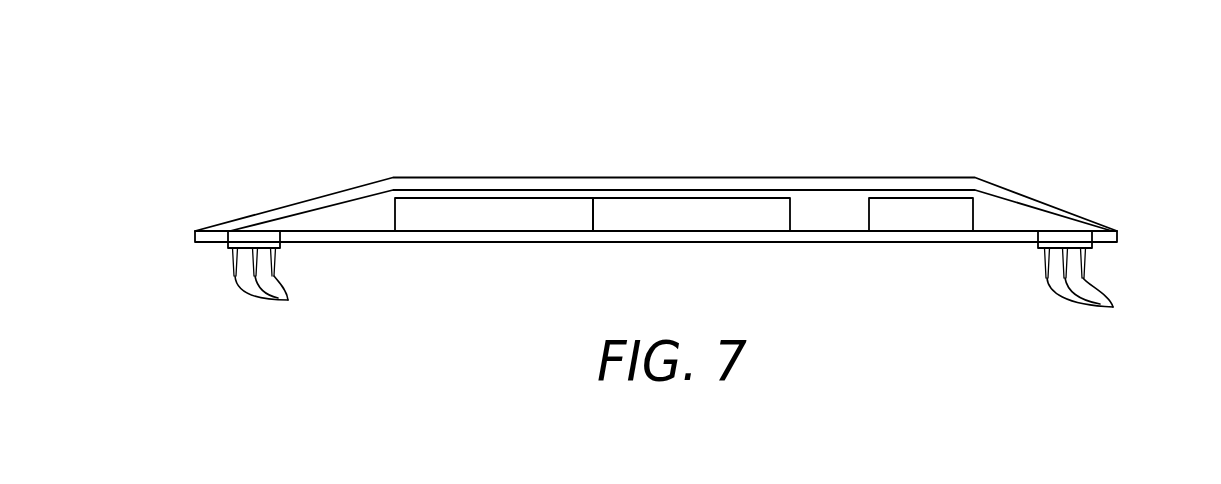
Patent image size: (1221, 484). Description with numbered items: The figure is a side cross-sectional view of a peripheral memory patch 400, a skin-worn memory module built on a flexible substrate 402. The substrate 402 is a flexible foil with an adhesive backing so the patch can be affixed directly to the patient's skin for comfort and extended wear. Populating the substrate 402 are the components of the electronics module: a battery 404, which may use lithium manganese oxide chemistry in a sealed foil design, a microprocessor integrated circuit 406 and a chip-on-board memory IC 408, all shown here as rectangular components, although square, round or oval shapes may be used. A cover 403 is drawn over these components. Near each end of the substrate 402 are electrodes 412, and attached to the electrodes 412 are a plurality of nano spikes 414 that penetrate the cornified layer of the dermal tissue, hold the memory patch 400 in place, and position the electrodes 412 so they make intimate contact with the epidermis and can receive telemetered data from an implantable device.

The peripheral memory patch 400 is at (1000, 188).
The flexible substrate 402 is at (1120, 232).
The cover 403 is at (608, 178).
The battery 404 is at (923, 213).
The microprocessor integrated circuit 406 is at (495, 220).
The memory IC 408 is at (680, 213).
The electrodes 412 is at (237, 231).
The nano spikes 414 is at (696, 290).